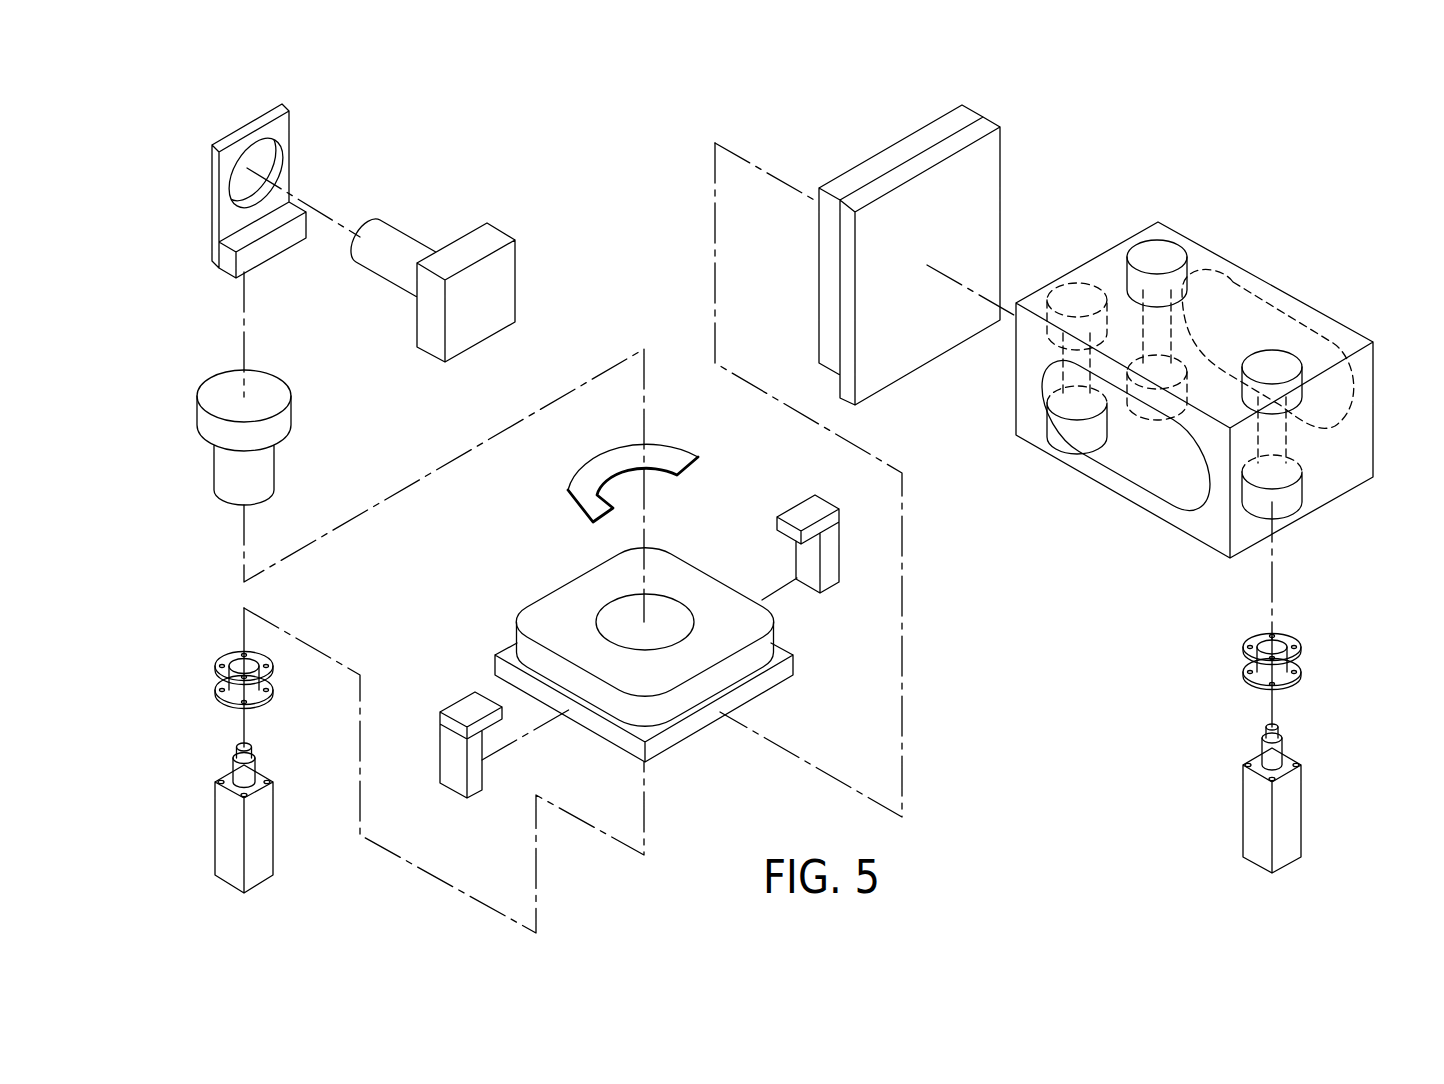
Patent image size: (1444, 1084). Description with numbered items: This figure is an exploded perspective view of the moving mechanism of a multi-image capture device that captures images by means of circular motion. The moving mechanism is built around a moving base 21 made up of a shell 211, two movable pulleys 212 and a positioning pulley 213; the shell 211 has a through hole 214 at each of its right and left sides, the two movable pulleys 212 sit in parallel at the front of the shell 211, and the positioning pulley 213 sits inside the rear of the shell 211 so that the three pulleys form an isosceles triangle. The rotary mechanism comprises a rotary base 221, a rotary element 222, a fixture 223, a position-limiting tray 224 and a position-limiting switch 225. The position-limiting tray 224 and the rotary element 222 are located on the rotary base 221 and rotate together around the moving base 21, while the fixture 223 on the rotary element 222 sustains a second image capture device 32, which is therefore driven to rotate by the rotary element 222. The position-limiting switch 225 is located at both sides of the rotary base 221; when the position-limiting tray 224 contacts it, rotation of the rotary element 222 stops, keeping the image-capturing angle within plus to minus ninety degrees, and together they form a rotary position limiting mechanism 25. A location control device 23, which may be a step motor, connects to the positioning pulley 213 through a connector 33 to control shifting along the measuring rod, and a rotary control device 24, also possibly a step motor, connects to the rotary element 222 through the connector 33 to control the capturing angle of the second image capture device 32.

The moving base 21 is at (1211, 333).
The shell 211 is at (1162, 232).
The movable pulleys 212 is at (1160, 275).
The positioning pulley 213 is at (1290, 410).
The through hole 214 is at (1185, 485).
The rotary base 221 is at (875, 170).
The rotary element 222 is at (265, 398).
The fixture 223 is at (215, 253).
The position-limiting tray 224 is at (583, 498).
The position-limiting switch 225 is at (800, 512).
The location control device 23 is at (1290, 825).
The rotary control device 24 is at (225, 845).
The rotary position limiting mechanism 25 is at (697, 732).
The second image capture device 32 is at (480, 245).
The connector 33 is at (225, 662).